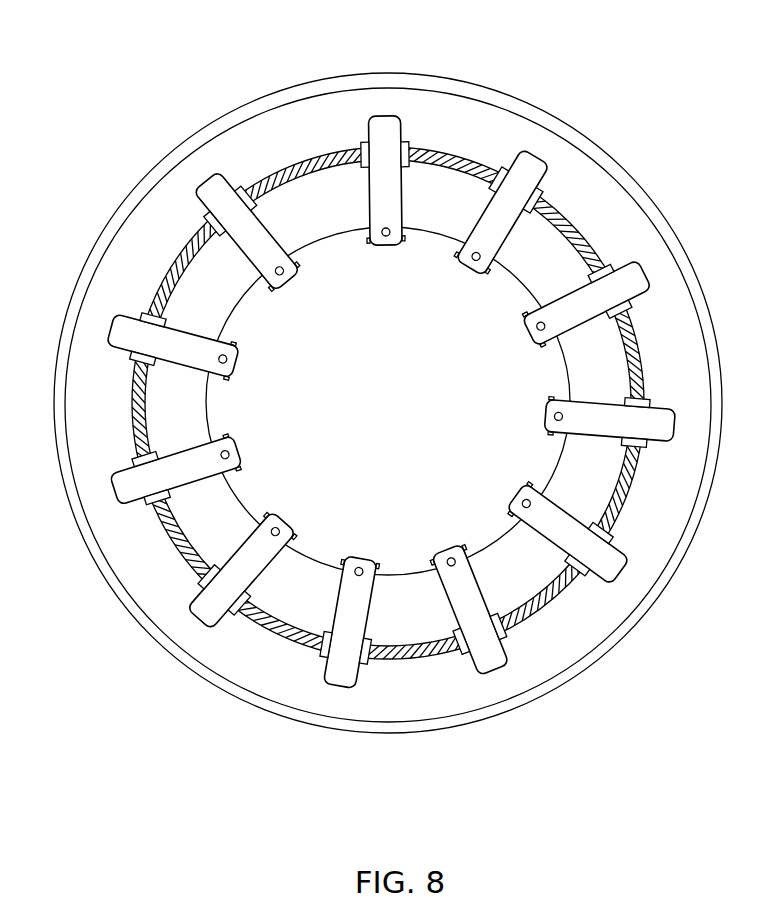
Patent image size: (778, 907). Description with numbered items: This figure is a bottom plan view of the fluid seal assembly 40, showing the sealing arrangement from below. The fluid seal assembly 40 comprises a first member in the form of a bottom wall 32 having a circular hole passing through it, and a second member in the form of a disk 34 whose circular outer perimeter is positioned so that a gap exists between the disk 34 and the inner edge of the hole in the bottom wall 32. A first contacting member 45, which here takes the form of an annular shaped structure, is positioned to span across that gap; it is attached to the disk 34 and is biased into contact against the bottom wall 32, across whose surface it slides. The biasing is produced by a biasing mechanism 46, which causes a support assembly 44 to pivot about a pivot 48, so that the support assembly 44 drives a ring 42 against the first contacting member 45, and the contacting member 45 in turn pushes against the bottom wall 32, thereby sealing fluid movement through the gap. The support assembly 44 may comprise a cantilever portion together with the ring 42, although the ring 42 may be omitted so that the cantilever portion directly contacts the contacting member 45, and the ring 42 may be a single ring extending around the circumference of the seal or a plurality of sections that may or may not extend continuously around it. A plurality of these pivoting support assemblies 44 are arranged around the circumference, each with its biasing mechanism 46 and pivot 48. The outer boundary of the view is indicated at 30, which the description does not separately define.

The outer housing ring 30 is at (645, 622).
The bottom wall 32 is at (583, 665).
The disk 34 is at (478, 298).
The fluid seal assembly 40 is at (224, 637).
The ring 42 is at (449, 158).
The support assembly 44 is at (376, 124).
The first contacting member 45 is at (228, 152).
The biasing mechanism 46 is at (283, 280).
The pivot 48 is at (265, 284).